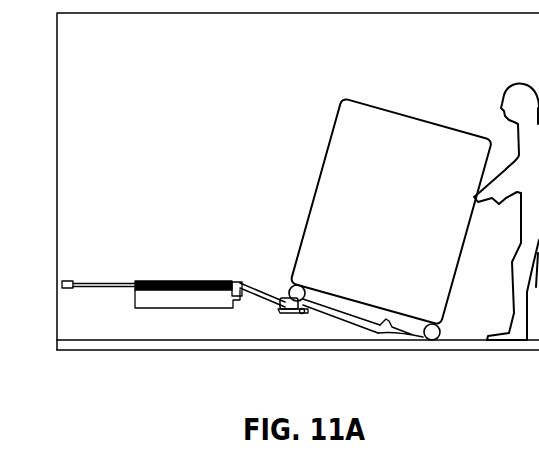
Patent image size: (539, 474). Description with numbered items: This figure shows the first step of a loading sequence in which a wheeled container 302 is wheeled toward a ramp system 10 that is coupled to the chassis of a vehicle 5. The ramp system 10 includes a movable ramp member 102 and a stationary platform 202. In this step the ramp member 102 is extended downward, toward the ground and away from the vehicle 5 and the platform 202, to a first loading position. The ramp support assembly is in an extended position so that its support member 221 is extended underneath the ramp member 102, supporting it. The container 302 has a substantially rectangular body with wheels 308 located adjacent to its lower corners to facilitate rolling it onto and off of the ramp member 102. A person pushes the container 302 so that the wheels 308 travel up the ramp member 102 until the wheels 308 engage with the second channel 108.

The ramp system 10 is at (146, 175).
The vehicle 5 is at (173, 297).
The stationary platform 202 is at (245, 284).
The wheeled container 302 is at (328, 200).
The wheels 308 is at (283, 302).
The second channel 108 is at (296, 308).
The support member 221 is at (301, 313).
The movable ramp member 102 is at (357, 326).